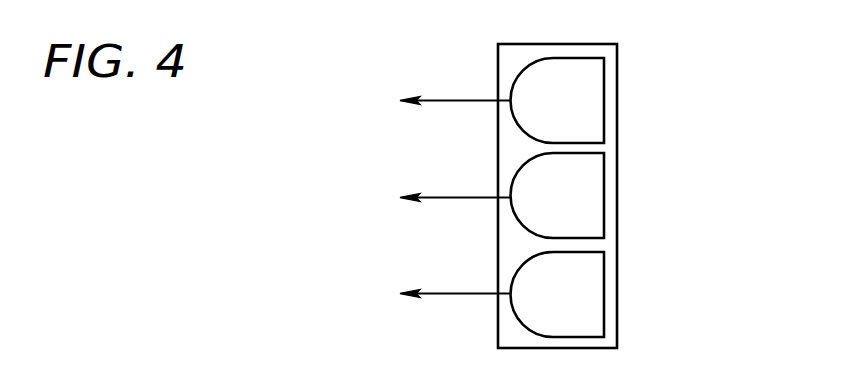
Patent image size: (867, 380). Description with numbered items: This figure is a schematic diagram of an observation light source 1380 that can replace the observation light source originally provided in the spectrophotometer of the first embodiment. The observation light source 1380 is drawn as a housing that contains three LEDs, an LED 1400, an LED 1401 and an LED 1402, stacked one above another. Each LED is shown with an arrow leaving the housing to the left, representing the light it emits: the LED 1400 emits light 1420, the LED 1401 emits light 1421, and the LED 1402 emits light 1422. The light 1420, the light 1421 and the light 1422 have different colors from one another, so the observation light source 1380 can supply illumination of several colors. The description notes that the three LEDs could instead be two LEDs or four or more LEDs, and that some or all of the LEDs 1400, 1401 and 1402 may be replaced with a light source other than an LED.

The observation light source 1380 is at (583, 43).
The LED 1400 is at (604, 108).
The LED 1401 is at (604, 197).
The LED 1402 is at (604, 293).
The light 1420 is at (462, 98).
The light 1421 is at (462, 195).
The light 1422 is at (462, 291).